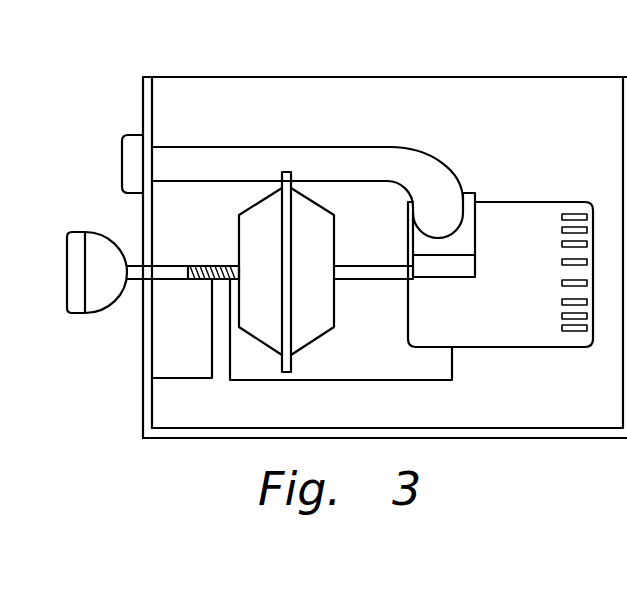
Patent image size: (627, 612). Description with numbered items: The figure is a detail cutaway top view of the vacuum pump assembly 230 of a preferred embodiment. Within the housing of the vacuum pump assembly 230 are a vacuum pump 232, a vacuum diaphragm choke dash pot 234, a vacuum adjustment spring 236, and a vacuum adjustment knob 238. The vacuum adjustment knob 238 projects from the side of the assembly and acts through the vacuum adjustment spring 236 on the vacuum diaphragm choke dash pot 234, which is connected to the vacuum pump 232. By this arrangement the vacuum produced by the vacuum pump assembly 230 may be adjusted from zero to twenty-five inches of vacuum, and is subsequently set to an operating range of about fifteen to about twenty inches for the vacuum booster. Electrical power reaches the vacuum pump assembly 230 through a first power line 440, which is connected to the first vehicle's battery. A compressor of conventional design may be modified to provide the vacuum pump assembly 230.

The vacuum pump assembly 230 is at (547, 76).
The vacuum pump 232 is at (465, 193).
The vacuum diaphragm choke dash pot 234 is at (287, 171).
The vacuum adjustment spring 236 is at (201, 262).
The vacuum adjustment knob 238 is at (79, 231).
The first power line 440 is at (143, 378).